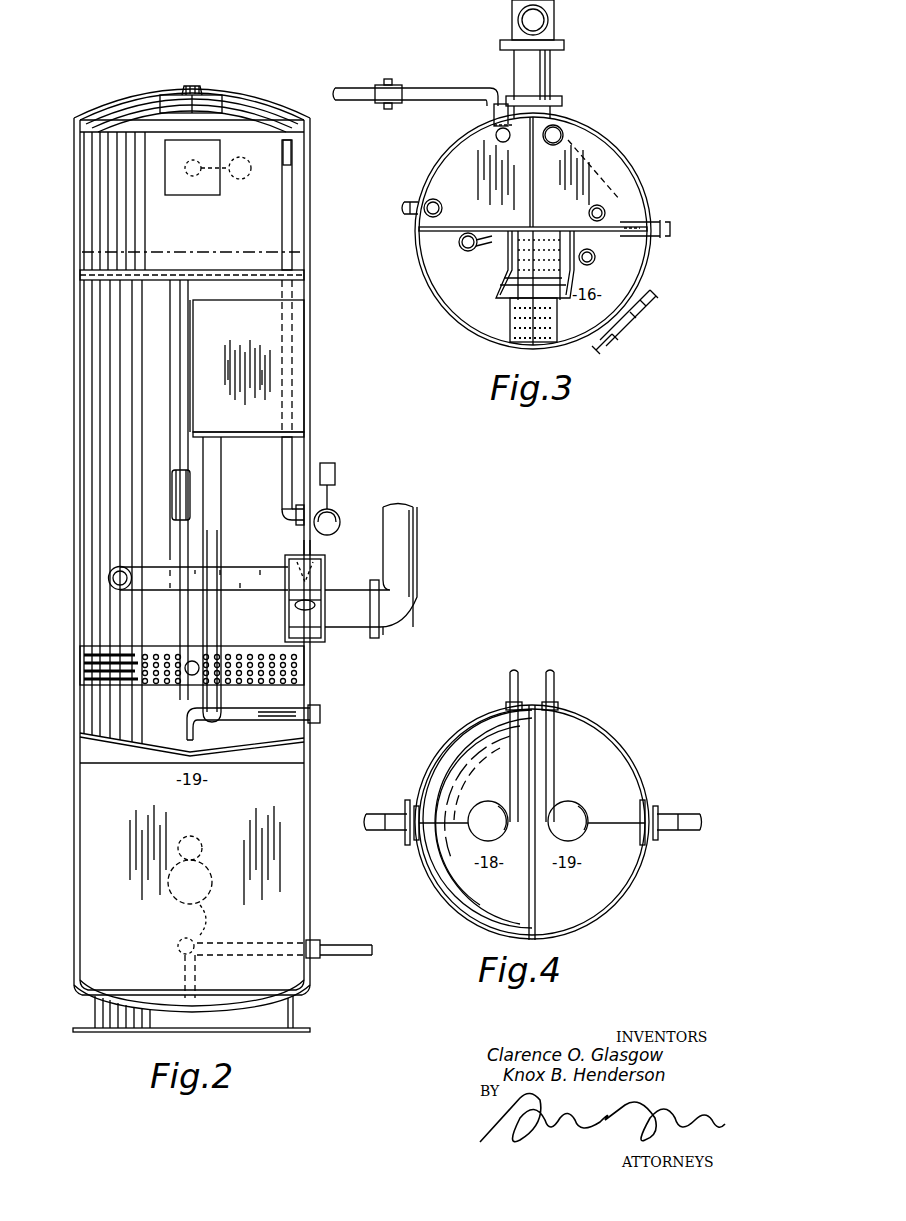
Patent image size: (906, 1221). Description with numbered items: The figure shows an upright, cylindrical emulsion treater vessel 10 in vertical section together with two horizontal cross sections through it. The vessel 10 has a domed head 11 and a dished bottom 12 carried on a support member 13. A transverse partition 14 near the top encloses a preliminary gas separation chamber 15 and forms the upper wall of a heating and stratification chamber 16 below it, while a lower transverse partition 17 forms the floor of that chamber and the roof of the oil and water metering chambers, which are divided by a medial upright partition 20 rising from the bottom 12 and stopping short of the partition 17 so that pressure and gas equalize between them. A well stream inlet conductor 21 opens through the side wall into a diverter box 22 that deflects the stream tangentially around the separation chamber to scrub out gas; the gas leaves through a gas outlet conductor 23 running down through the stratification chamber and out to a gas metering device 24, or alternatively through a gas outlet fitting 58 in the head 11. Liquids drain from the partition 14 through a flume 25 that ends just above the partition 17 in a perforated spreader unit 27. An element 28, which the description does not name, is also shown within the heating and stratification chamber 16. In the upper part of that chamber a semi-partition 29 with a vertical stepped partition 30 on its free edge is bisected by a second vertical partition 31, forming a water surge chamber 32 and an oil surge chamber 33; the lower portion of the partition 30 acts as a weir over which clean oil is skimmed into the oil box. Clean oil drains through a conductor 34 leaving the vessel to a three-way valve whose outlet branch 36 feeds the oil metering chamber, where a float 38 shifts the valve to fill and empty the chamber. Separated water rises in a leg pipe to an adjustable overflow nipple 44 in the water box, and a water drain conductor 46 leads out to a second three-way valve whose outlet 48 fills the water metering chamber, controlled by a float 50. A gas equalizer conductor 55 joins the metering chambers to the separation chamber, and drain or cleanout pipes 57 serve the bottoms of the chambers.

In FIG. 2, the emulsion treater vessel 10 is at (80, 431).
In FIG. 3, the emulsion treater vessel 10 is at (460, 322).
In FIG. 4, the emulsion treater vessel 10 is at (448, 752).
In FIG. 2, the domed head 11 is at (258, 92).
In FIG. 2, the dished bottom 12 is at (94, 990).
In FIG. 4, the dished bottom 12 is at (472, 904).
In FIG. 2, the support member 13 is at (128, 1030).
In FIG. 2, the transverse partition 14 is at (166, 280).
In FIG. 2, the preliminary gas separation chamber 15 is at (88, 233).
In FIG. 2, the heating and stratification chamber 16 is at (88, 381).
In FIG. 2, the transverse partition 17 is at (228, 752).
In FIG. 3, the transverse partition 17 is at (440, 284).
In FIG. 2, the medial upright partition 20 is at (88, 816).
In FIG. 2, the well stream inlet conductor 21 is at (219, 168).
In FIG. 2, the diverter box 22 is at (205, 196).
In FIG. 2, the gas outlet conductor 23 is at (282, 212).
In FIG. 3, the gas outlet conductor 23 is at (466, 92).
In FIG. 2, the gas metering device 24 is at (332, 512).
In FIG. 3, the gas metering device 24 is at (396, 80).
In FIG. 2, the flume 25 is at (188, 470).
In FIG. 3, the flume 25 is at (476, 252).
In FIG. 2, the perforated spreader unit 27 is at (252, 652).
In FIG. 3, the perforated spreader unit 27 is at (510, 316).
In FIG. 2, the burner assembly 28 is at (405, 614).
In FIG. 2, the semi-partition 29 is at (280, 428).
In FIG. 3, the semi-partition 29 is at (612, 164).
In FIG. 2, the stepped partition 30 is at (280, 440).
In FIG. 2, the second vertical partition 31 is at (280, 322).
In FIG. 3, the second vertical partition 31 is at (528, 195).
In FIG. 2, the water surge chamber 32 is at (270, 426).
In FIG. 3, the water surge chamber 32 is at (630, 186).
In FIG. 3, the oil surge chamber 33 is at (458, 148).
In FIG. 2, the oil conductor 34 is at (226, 540).
In FIG. 3, the oil conductor 34 is at (414, 198).
In FIG. 2, the outlet branch 36 is at (241, 951).
In FIG. 4, the outlet branch 36 is at (380, 838).
In FIG. 2, the float 38 is at (212, 860).
In FIG. 4, the float 38 is at (496, 806).
In FIG. 3, the adjustable overflow nipple 44 is at (588, 213).
In FIG. 3, the water drain conductor 46 is at (563, 135).
In FIG. 4, the valve outlet 48 is at (690, 830).
In FIG. 4, the float 50 is at (584, 806).
In FIG. 3, the gas equalizer conductor 55 is at (587, 265).
In FIG. 4, the drain or cleanout pipes 57 is at (508, 684).
In FIG. 2, the alternate gas outlet fitting 58 is at (190, 86).